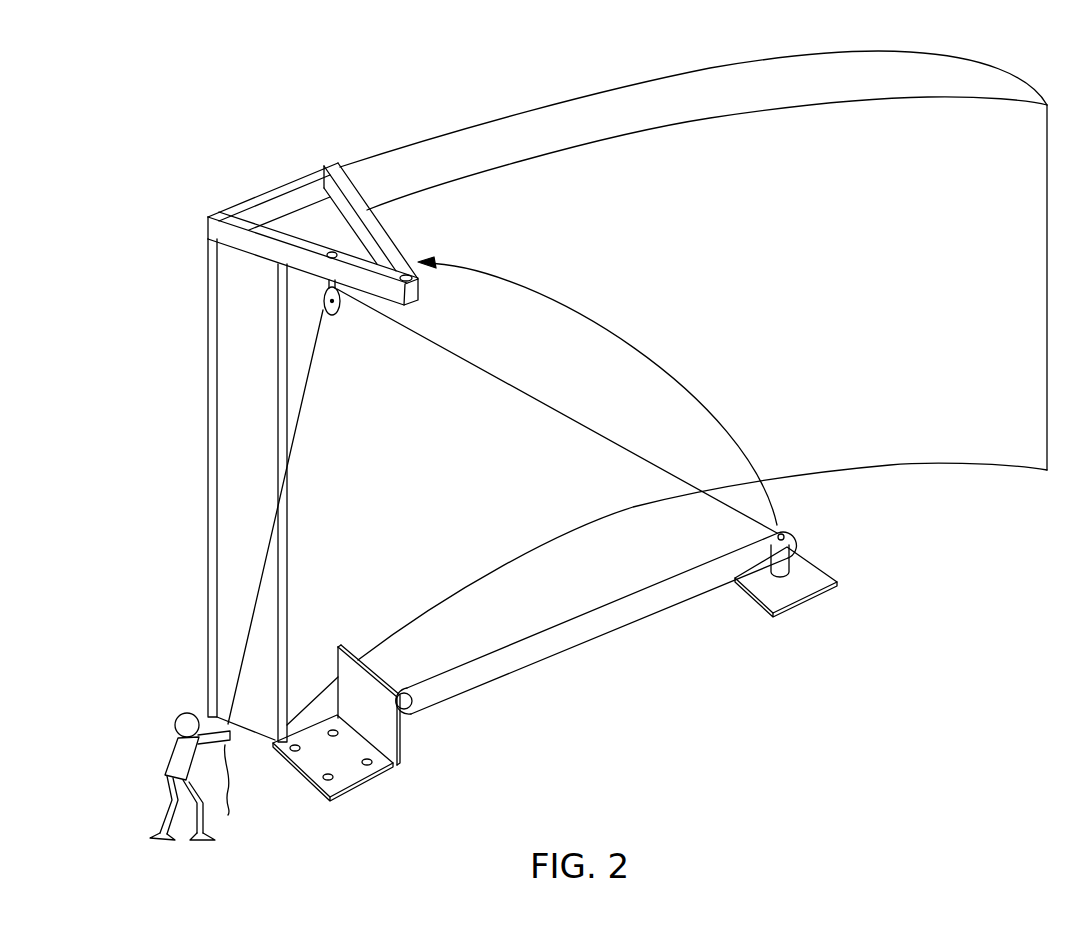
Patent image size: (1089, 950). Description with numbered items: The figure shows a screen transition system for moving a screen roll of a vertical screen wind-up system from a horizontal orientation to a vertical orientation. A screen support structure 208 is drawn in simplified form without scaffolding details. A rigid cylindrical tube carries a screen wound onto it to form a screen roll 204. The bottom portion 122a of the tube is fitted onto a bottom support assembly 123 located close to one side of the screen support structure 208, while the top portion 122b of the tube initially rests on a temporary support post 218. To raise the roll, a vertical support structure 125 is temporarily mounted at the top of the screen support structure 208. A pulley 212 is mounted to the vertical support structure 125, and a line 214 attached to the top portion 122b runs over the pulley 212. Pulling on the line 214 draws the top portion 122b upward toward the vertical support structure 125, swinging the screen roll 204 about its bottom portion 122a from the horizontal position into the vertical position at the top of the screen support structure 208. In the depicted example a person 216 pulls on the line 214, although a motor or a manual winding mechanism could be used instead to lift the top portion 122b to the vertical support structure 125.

The screen support structure 208 is at (511, 111).
The vertical support structure 125 is at (268, 192).
The pulley 212 is at (333, 316).
The line 214 is at (525, 394).
The screen roll 204 is at (586, 640).
The bottom portion of the rigid tube 122a is at (408, 709).
The top portion of the rigid tube 122b is at (792, 538).
The temporary support post 218 is at (795, 608).
The bottom support assembly 123 is at (376, 791).
The person 216 is at (172, 752).